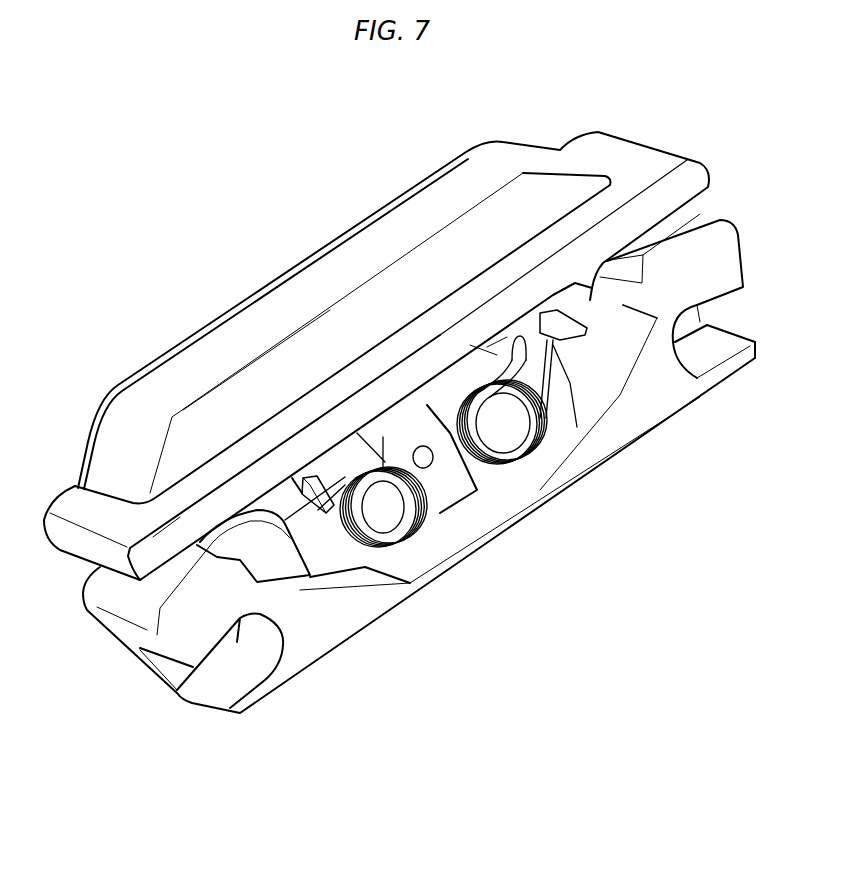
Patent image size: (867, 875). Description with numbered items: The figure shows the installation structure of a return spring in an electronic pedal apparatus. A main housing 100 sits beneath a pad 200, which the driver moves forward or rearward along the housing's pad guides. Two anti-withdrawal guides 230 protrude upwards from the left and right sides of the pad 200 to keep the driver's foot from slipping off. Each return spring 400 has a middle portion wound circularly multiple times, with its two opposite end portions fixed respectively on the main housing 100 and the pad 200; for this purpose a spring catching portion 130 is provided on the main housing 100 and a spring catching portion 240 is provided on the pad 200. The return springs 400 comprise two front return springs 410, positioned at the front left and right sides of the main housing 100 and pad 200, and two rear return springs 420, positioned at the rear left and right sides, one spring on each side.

The main housing 100 is at (305, 678).
The spring catching portion 130 is at (483, 353).
The pad 200 is at (196, 330).
The anti-withdrawal guide 230 is at (307, 282).
The spring catching portion 240 is at (321, 506).
The return spring 400 is at (512, 478).
The front return spring 410 is at (541, 437).
The rear return spring 420 is at (413, 542).